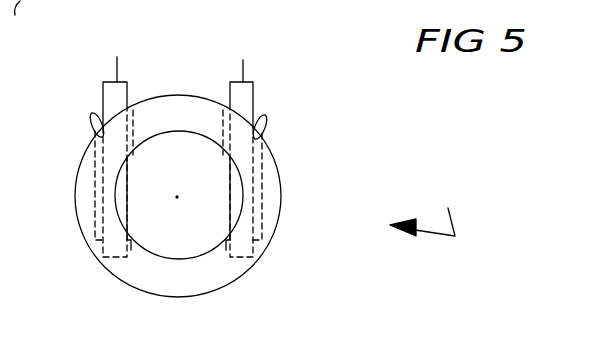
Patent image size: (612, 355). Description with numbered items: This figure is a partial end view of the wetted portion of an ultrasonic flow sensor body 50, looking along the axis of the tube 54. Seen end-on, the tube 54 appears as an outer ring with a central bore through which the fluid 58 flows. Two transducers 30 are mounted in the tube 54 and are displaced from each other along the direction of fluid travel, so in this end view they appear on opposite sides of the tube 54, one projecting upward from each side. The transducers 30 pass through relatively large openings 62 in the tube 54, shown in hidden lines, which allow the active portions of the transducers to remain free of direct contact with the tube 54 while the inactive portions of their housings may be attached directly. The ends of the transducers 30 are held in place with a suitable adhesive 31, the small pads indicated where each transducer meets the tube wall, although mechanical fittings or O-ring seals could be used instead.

The transducers 30 is at (230, 108).
The adhesive 31 is at (97, 115).
The ultrasonic flow sensor body 50 is at (429, 198).
The tube 54 is at (282, 198).
The fluid 58 is at (200, 233).
The openings 62 is at (97, 164).